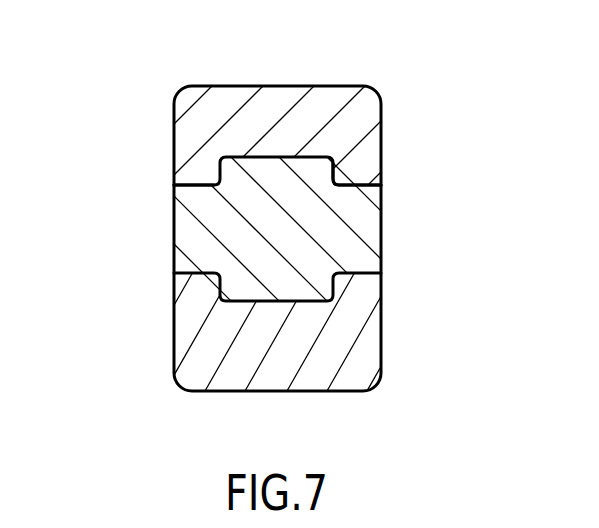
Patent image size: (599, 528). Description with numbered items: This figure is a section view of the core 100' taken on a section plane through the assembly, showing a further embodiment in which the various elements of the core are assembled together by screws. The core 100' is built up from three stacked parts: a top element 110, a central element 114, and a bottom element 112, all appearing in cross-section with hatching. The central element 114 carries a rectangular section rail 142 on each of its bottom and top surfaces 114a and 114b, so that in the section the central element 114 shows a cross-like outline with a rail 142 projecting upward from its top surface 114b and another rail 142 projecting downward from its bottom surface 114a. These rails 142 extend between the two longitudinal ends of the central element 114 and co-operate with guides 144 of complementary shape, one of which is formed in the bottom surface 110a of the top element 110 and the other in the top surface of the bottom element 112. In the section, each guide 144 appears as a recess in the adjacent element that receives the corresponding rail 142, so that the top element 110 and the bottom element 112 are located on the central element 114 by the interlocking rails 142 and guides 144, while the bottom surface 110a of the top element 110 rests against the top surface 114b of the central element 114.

The core 100' is at (318, 209).
The top element 110 is at (308, 118).
The bottom surface of the top element 110a is at (194, 183).
The bottom element 112 is at (274, 372).
The central element 114 is at (297, 236).
The bottom surface of the central element 114a is at (357, 272).
The top surface of the central element 114b is at (356, 186).
The rail 142 is at (304, 149).
The guide 144 is at (276, 168).